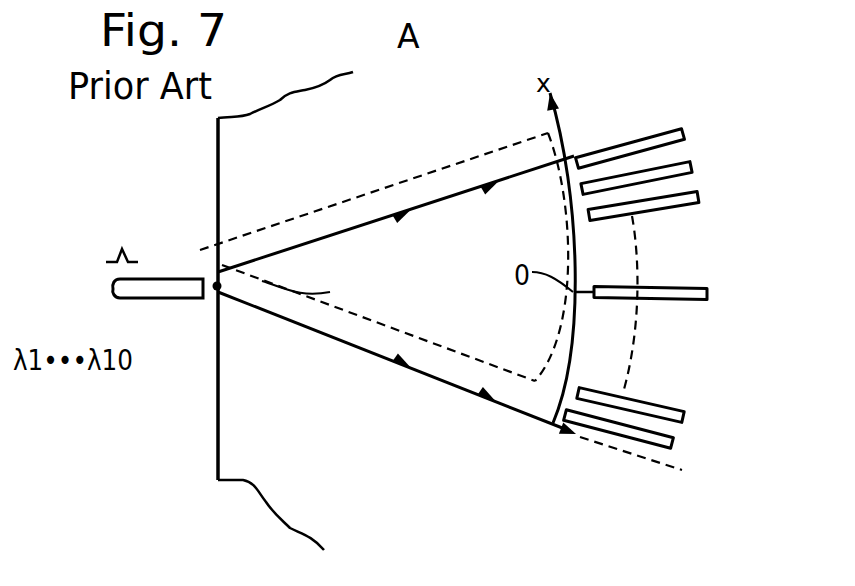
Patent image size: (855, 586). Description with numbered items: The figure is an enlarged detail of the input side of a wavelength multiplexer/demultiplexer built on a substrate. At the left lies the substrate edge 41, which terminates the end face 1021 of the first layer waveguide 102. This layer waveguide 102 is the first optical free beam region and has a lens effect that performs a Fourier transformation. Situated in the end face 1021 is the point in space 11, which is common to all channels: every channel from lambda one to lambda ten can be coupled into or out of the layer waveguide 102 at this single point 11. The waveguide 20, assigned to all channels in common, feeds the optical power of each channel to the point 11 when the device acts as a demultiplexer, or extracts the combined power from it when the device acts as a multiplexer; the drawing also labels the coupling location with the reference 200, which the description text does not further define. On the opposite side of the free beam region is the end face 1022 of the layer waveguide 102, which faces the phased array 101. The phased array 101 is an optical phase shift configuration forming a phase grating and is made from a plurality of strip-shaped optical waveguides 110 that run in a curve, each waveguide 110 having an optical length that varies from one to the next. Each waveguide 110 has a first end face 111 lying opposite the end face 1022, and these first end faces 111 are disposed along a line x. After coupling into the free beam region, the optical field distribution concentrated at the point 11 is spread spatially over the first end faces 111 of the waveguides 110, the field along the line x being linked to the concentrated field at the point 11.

The waveguide 20 is at (118, 297).
The light input point 200 is at (216, 288).
The substrate edge 41 is at (218, 427).
The point in space 11 is at (308, 290).
The first layer waveguide 102 is at (440, 196).
The end face 1021 is at (203, 262).
The end face 1022 is at (577, 302).
The first end face 111 is at (571, 161).
The phased array 101 is at (611, 138).
The strip-shaped optical waveguide 110 is at (649, 137).